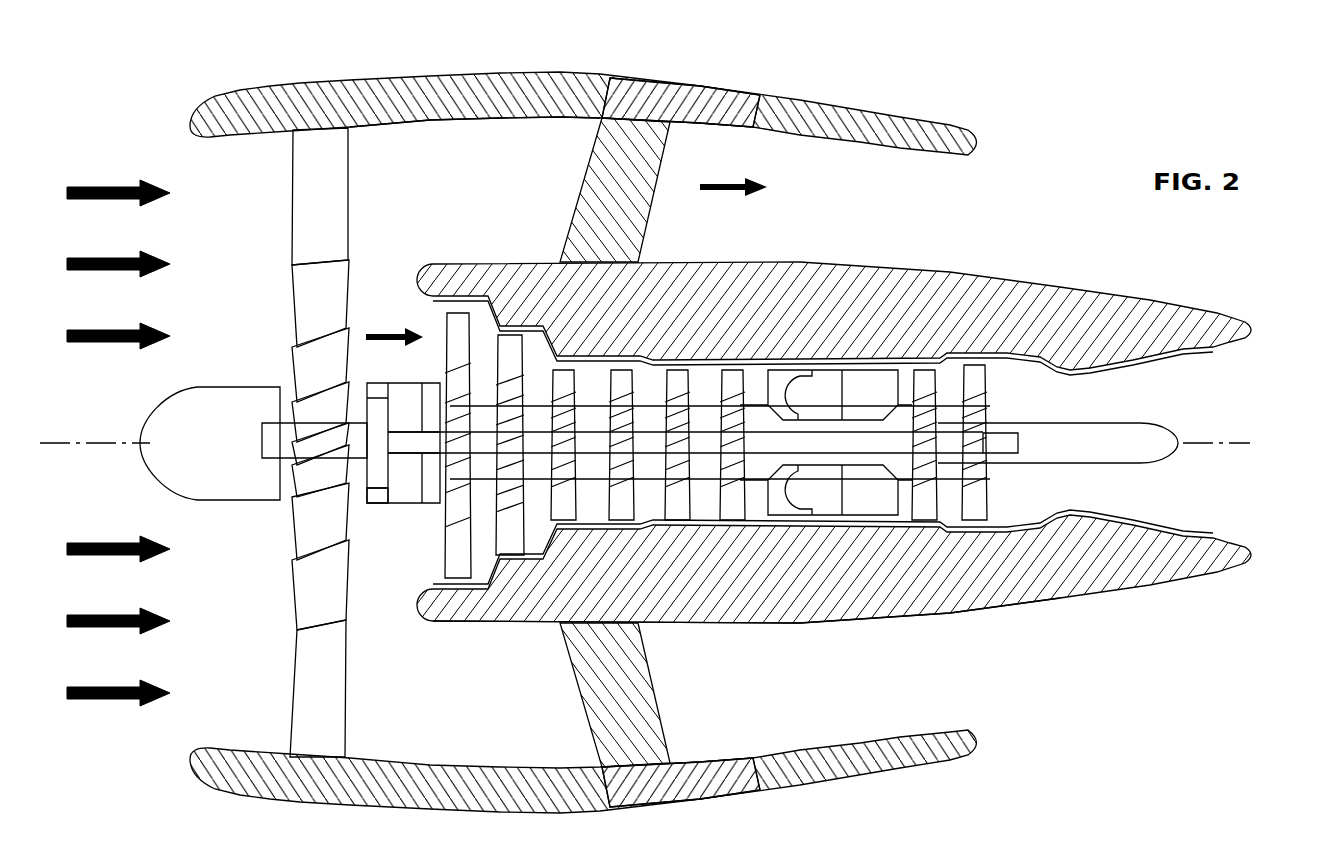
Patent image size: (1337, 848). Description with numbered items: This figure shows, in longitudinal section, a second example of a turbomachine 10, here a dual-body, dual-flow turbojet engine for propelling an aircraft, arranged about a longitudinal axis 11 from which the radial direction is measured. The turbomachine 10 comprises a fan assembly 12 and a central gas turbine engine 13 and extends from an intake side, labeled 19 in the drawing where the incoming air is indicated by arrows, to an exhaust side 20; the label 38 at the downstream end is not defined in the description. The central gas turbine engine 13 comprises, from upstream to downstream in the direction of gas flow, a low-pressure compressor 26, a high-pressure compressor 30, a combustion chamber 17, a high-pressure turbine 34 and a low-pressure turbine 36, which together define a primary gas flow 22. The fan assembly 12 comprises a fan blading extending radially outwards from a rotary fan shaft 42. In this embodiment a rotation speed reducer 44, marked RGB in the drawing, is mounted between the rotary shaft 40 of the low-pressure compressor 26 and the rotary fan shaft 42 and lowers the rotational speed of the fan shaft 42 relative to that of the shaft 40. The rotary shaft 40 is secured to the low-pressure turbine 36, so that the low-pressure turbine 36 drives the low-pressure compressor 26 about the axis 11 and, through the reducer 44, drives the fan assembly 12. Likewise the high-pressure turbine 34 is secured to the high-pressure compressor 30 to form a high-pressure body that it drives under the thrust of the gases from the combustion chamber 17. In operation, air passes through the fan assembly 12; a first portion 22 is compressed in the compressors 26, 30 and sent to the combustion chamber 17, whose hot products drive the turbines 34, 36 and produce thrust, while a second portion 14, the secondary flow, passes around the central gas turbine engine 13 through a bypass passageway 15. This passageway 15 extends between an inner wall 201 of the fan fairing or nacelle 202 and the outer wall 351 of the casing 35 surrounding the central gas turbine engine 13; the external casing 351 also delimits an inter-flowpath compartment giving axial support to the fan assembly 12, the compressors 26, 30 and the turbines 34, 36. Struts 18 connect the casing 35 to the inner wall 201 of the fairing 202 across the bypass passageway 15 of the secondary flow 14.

The turbomachine 10 is at (670, 413).
The longitudinal axis 11 is at (1268, 440).
The fan assembly 12 is at (290, 213).
The central gas turbine engine 13 is at (1177, 563).
The secondary flow 14 is at (722, 192).
The bypass passageway 15 is at (814, 207).
The combustion chamber 17 is at (831, 500).
The struts 18 is at (629, 202).
The inlet airflow 19 is at (231, 282).
The exhaust side 20 is at (977, 226).
The primary gas flow 22 is at (372, 326).
The low-pressure compressor 26 is at (457, 328).
The high-pressure compressor 30 is at (621, 382).
The high-pressure turbine 34 is at (927, 382).
The casing 35 is at (811, 582).
The low-pressure turbine 36 is at (975, 378).
The exhaust 38 is at (1242, 403).
The rotary shaft of the low-pressure compressor 40 is at (425, 443).
The rotary fan shaft 42 is at (360, 443).
The rotation speed reducer 44 is at (408, 505).
The inner wall of the fan fairing 201 is at (487, 119).
The fan fairing 202 is at (487, 95).
The external casing 351 is at (815, 623).
The reduction gearbox RGB is at (403, 417).